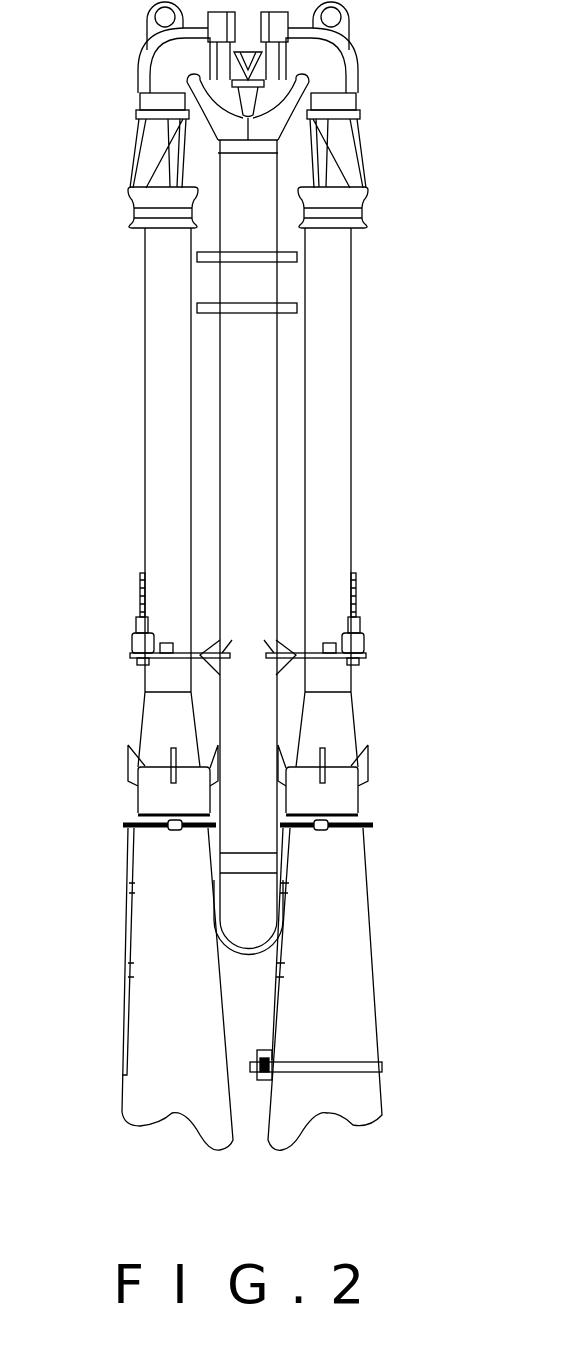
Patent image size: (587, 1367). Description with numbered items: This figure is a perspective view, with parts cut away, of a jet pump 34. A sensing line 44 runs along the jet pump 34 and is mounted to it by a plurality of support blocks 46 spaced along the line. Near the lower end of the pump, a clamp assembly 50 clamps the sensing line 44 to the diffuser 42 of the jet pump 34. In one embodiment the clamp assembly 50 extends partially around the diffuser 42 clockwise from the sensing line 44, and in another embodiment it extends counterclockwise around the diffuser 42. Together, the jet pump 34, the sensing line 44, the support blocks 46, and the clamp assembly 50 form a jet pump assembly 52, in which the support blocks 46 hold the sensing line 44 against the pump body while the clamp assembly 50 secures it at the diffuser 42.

The jet pump 34 is at (388, 595).
The diffuser 42 is at (155, 1007).
The sensing line 44 is at (125, 932).
The support blocks 46 is at (130, 883).
The clamp assembly 50 is at (261, 1078).
The jet pump assembly 52 is at (272, 1015).